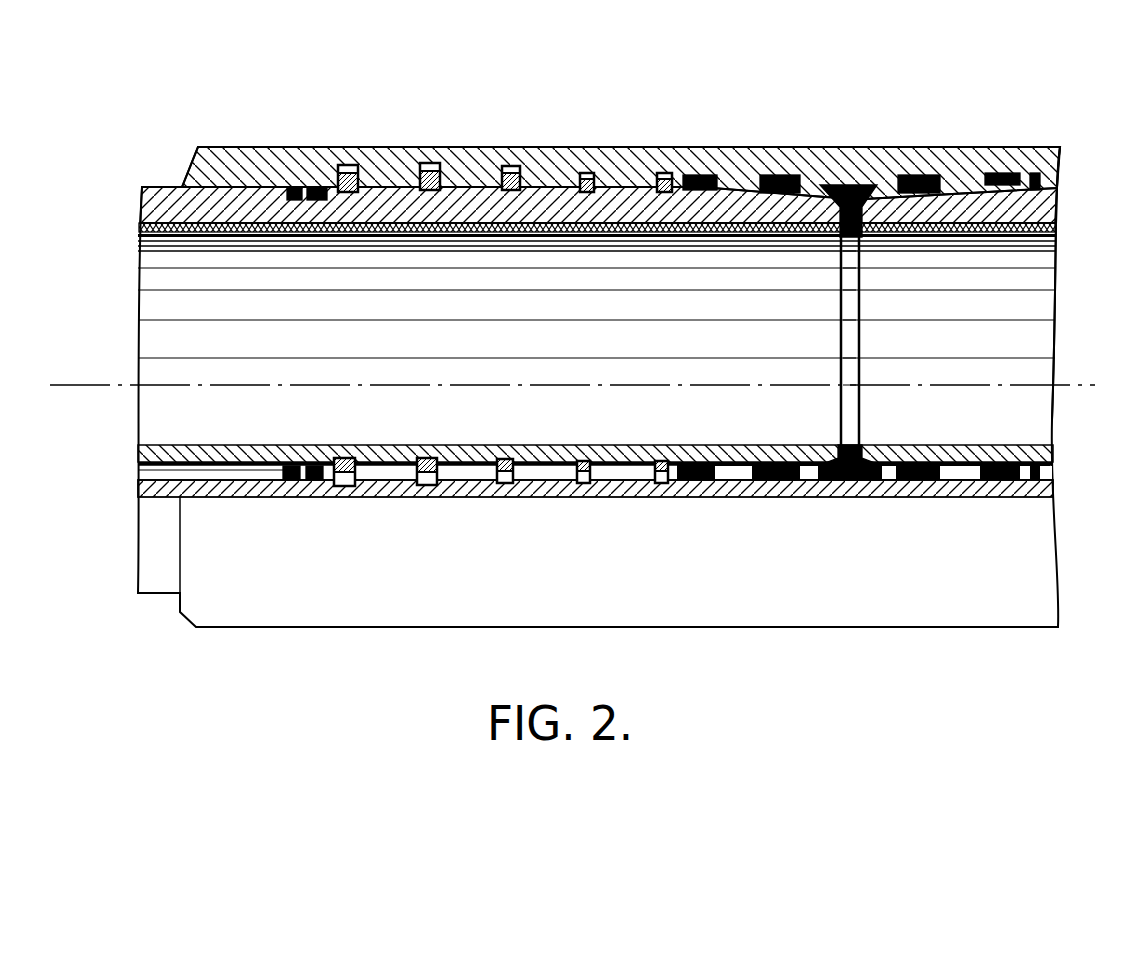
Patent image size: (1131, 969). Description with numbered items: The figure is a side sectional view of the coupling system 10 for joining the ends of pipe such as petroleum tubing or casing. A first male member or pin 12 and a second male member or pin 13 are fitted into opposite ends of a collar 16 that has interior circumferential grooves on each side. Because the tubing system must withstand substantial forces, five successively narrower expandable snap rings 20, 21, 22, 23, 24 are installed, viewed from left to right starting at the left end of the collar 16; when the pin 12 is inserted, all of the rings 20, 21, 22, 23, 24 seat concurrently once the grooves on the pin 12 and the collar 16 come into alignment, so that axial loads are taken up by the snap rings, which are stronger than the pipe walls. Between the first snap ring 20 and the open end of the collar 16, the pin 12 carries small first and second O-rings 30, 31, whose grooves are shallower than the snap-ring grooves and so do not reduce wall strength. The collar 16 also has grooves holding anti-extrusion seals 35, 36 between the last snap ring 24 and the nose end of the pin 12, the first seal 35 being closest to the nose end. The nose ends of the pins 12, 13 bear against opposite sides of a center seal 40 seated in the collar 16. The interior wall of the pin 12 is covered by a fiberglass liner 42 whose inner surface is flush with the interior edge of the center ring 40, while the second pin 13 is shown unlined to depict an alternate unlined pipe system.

The coupling system 10 is at (308, 82).
The first male member 12 is at (141, 207).
The second male member 13 is at (1056, 201).
The collar 16 is at (182, 176).
The first snap ring 20 is at (348, 165).
The second snap ring 21 is at (430, 163).
The third snap ring 22 is at (503, 166).
The fourth snap ring 23 is at (585, 173).
The fifth snap ring 24 is at (660, 173).
The first O-ring 30 is at (276, 186).
The second O-ring 31 is at (306, 188).
The first anti-extrusion seal 35 is at (786, 175).
The second anti-extrusion seal 36 is at (697, 175).
The center seal 40 is at (877, 185).
The fiberglass liner 42 is at (173, 236).